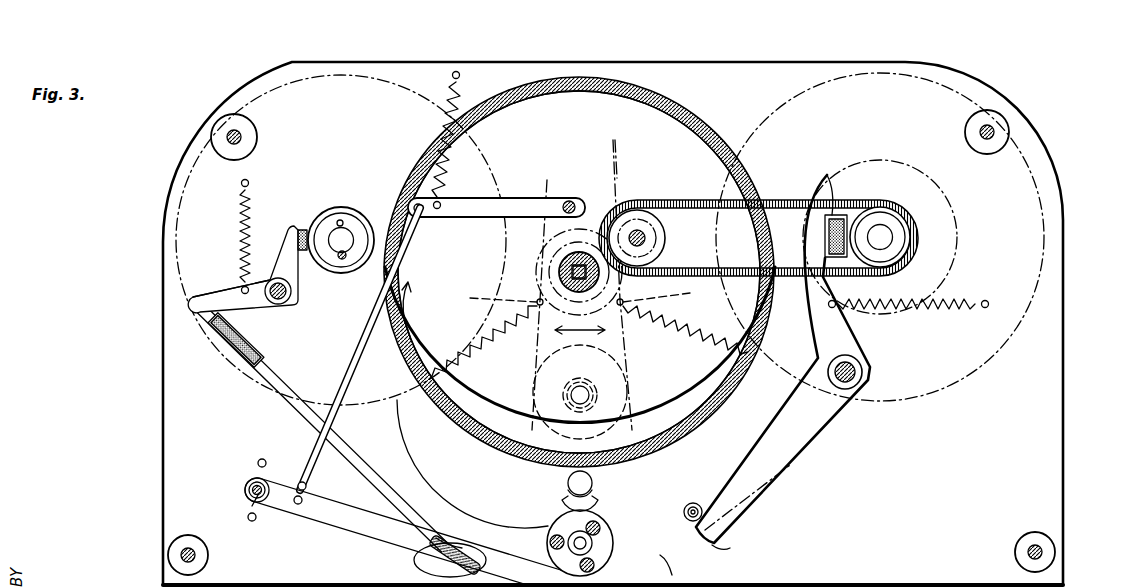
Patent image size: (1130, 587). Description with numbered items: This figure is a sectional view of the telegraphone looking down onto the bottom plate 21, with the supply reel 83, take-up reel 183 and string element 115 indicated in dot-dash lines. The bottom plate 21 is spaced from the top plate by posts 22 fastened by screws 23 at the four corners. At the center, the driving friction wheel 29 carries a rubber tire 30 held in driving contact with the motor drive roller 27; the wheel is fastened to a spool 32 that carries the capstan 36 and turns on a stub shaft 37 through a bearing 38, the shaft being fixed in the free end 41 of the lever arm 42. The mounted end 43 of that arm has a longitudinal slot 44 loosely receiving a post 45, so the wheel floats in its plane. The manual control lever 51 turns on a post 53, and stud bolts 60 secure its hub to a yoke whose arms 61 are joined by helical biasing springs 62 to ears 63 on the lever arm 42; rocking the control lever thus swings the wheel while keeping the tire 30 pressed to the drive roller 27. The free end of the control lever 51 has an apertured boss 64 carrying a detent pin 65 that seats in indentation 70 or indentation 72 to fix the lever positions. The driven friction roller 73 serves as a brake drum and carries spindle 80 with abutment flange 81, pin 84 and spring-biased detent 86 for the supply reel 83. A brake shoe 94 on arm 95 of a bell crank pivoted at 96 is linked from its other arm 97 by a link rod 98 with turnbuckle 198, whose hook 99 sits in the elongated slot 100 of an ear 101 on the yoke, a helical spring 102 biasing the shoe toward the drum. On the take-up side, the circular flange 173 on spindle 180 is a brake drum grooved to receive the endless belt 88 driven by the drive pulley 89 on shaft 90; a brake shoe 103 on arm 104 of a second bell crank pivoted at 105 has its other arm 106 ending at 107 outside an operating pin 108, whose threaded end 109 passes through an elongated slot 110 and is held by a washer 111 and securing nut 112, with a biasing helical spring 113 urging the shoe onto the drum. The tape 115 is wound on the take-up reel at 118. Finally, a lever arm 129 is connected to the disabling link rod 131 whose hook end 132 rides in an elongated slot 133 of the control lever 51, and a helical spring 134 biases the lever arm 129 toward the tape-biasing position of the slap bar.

The bottom plate 21 is at (1062, 442).
The posts 22 is at (222, 116).
The screws 23 is at (236, 130).
The drive roller 27 is at (566, 485).
The driving friction wheel 29 is at (692, 128).
The rubber tire 30 is at (670, 96).
The spool 32 is at (558, 282).
The capstan 36 is at (636, 288).
The stub shaft 37 is at (582, 252).
The bearing 38 is at (560, 262).
The free end of lever arm 41 is at (566, 198).
The lever arm 42 is at (627, 356).
The mounted end 43 is at (633, 413).
The slot 44 is at (562, 418).
The post 45 is at (597, 390).
The control lever 51 is at (358, 530).
The post 53 is at (590, 520).
The stud bolts 60 is at (548, 544).
The yoke arms 61 is at (408, 420).
The helical biasing springs 62 is at (508, 340).
The ears 63 is at (492, 297).
The apertured boss 64 is at (250, 508).
The detent pin 65 is at (246, 490).
The indentation 70 is at (258, 460).
The indentation 72 is at (256, 520).
The driven friction roller 73 is at (343, 207).
The spindle 80 is at (334, 252).
The abutment flange 81 is at (352, 223).
The supply reel 83 is at (400, 75).
The pin 84 is at (338, 220).
The spring-biased detent 86 is at (343, 258).
The endless belt 88 is at (690, 200).
The drive pulley 89 is at (650, 208).
The shaft 90 is at (646, 238).
The brake shoe 94 is at (300, 230).
The bell crank arm 95 is at (284, 262).
The pivot 96 is at (284, 302).
The bell crank arm 97 is at (218, 296).
The link rod 98 is at (290, 388).
The hook 99 is at (462, 540).
The elongated slot 100 is at (432, 565).
The ear 101 is at (414, 556).
The helical spring 102 is at (240, 214).
The brake shoe 103 is at (832, 185).
The bell crank arm 104 is at (810, 246).
The pivot 105 is at (862, 372).
The bell crank arm 106 is at (822, 426).
The arm end 107 is at (726, 548).
The operating pin 108 is at (690, 562).
The threaded end 109 is at (698, 503).
The elongated slot 110 is at (684, 510).
The washer 111 is at (686, 518).
The securing nut 112 is at (740, 500).
The biasing helical spring 113 is at (958, 302).
The string element 115 is at (618, 165).
The tape winding 118 is at (958, 236).
The lever arm 129 is at (514, 198).
The disabling link rod 131 is at (364, 352).
The hook end 132 is at (308, 486).
The elongated slot 133 is at (304, 500).
The helical spring 134 is at (445, 165).
The circular flange 173 is at (882, 206).
The spindle 180 is at (888, 232).
The take-up reel 183 is at (1052, 268).
The turnbuckle 198 is at (236, 330).